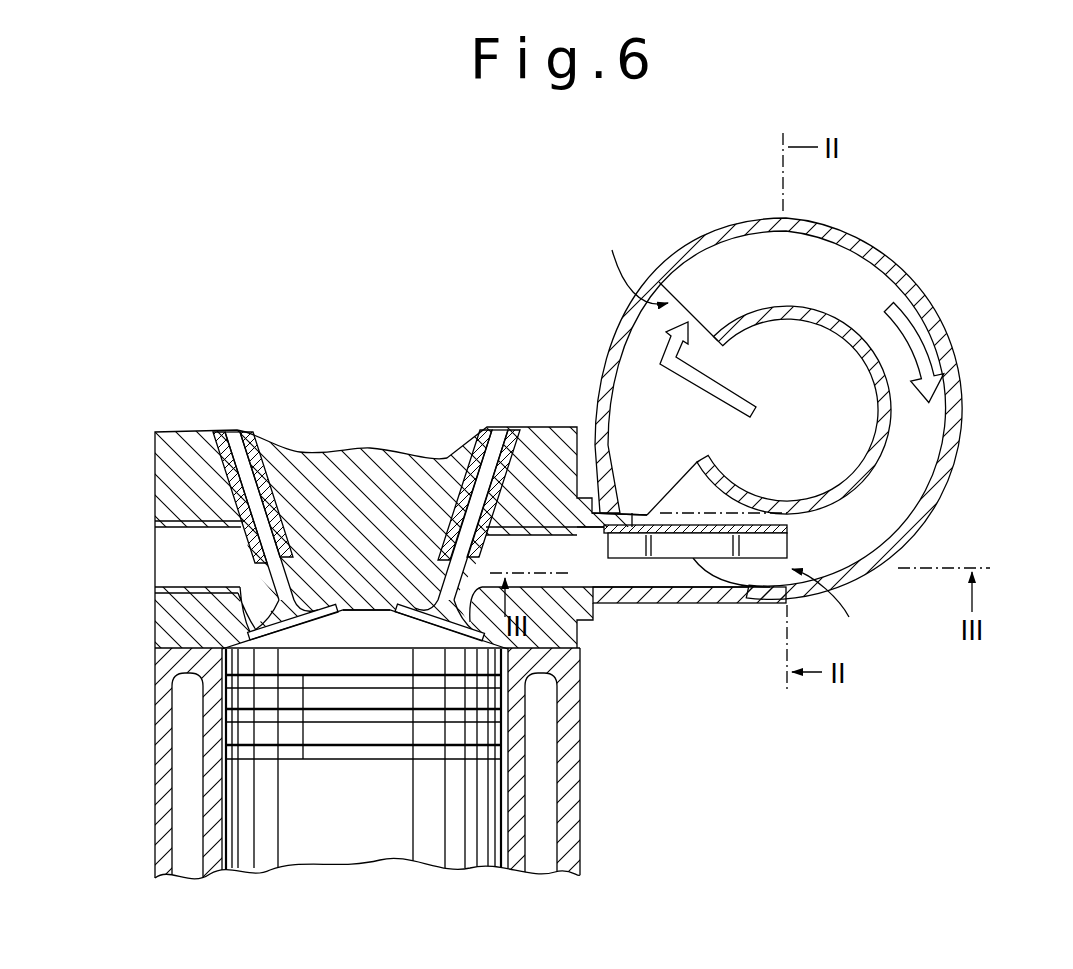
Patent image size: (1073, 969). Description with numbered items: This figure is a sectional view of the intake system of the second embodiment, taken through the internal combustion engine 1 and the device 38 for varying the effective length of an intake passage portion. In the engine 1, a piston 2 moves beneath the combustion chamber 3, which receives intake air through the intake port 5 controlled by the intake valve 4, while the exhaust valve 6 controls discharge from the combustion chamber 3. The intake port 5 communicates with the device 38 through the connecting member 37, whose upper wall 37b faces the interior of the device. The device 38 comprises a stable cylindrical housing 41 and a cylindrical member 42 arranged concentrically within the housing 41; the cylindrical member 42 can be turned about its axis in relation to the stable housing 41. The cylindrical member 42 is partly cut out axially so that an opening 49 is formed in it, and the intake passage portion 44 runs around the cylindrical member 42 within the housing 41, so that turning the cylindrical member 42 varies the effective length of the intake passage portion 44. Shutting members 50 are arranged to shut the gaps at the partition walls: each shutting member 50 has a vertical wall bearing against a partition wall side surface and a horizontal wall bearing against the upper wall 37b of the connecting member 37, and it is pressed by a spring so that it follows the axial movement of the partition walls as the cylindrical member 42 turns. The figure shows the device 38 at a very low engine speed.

The internal combustion engine 1 is at (152, 768).
The piston 2 is at (300, 840).
The combustion chamber 3 is at (384, 632).
The intake valve 4 is at (423, 570).
The intake port 5 is at (543, 543).
The exhaust valve 6 is at (288, 588).
The connecting member 37 is at (622, 616).
The upper wall of connecting member 37b is at (600, 518).
The device for varying the effective length of an intake passage portion 38 is at (794, 404).
The stable cylindrical housing 41 is at (968, 346).
The cylindrical member 42 is at (867, 388).
The second intake passage portion 44 is at (843, 282).
The opening 49 is at (697, 403).
The shutting member 50 is at (799, 531).